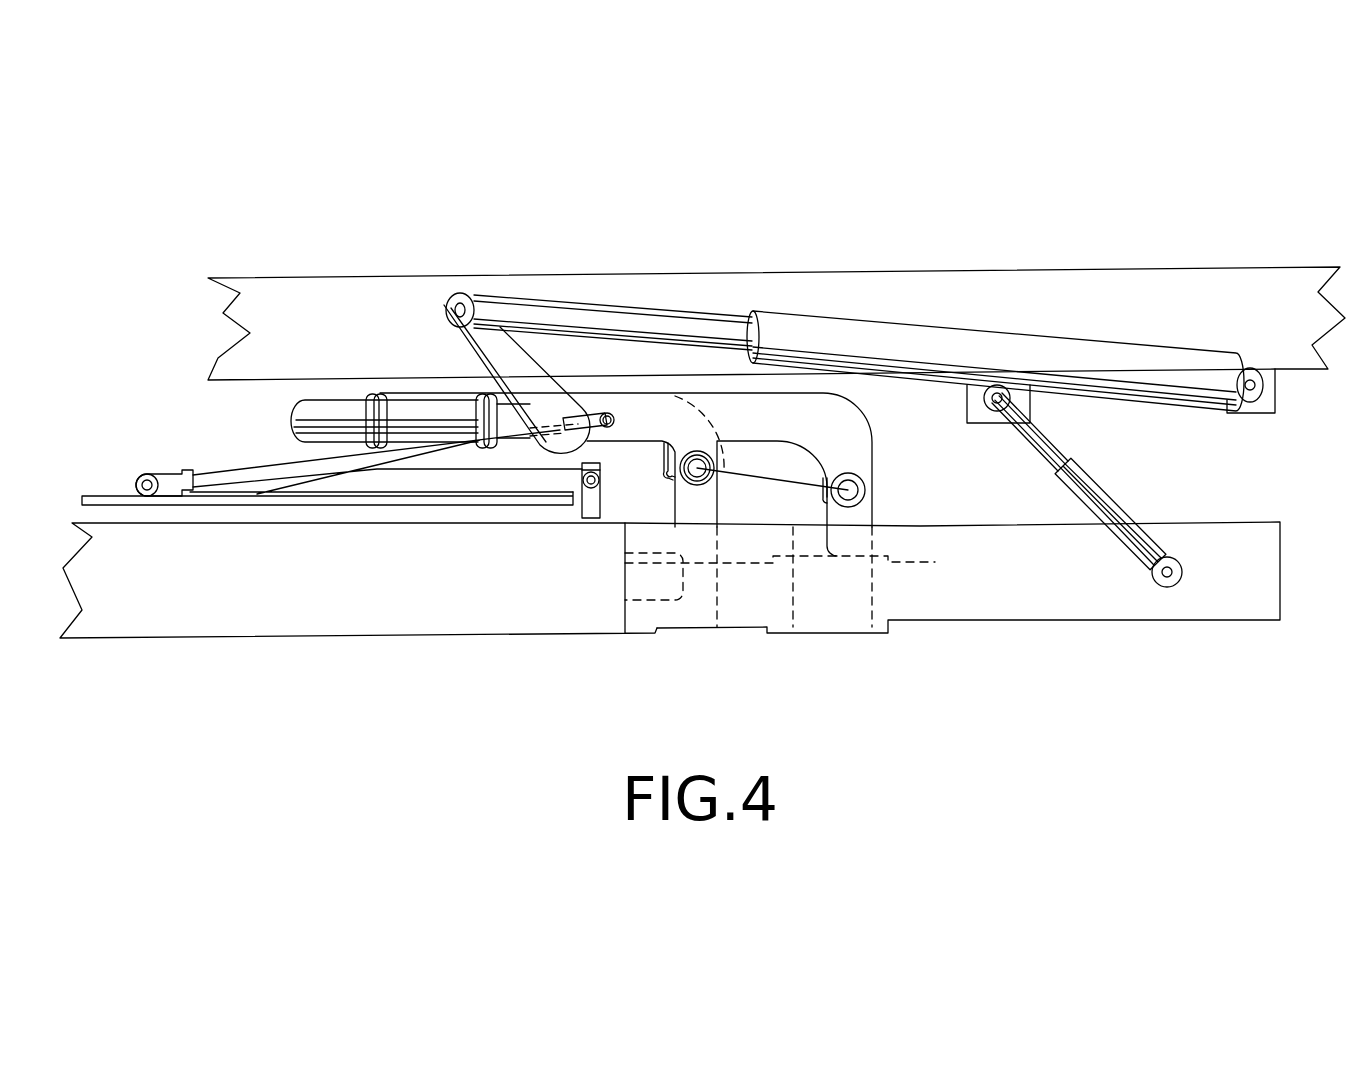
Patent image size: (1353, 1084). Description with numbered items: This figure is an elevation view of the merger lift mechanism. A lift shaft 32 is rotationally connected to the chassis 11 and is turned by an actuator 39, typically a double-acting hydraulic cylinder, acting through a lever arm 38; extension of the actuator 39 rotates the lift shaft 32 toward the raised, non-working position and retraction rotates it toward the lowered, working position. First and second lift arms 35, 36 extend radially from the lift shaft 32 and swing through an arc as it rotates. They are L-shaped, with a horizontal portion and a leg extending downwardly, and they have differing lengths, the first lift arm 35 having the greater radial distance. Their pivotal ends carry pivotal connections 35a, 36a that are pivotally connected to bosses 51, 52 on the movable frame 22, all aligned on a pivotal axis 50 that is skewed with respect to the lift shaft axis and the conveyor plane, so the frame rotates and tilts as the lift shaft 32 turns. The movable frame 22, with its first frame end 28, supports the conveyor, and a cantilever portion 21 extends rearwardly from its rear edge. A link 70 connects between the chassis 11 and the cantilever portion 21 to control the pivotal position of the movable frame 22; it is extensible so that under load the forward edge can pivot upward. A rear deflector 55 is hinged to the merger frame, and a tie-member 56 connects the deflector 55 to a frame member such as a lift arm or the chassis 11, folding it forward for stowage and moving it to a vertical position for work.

The chassis 11 is at (1137, 298).
The cantilever portion 21 is at (1023, 615).
The movable frame 22 is at (250, 688).
The first frame end 28 is at (502, 608).
The lift shaft 32 is at (345, 410).
The first lift arm 35 is at (845, 423).
The first pivotal connection 35a is at (893, 479).
The second lift arm 36 is at (682, 447).
The second pivotal connection 36a is at (648, 500).
The lever arm 38 is at (500, 358).
The actuator 39 is at (826, 323).
The pivotal axis 50 is at (745, 470).
The boss 51 is at (853, 517).
The boss 52 is at (700, 507).
The rear deflector 55 is at (118, 498).
The tie-member 56 is at (278, 462).
The link 70 is at (1085, 475).